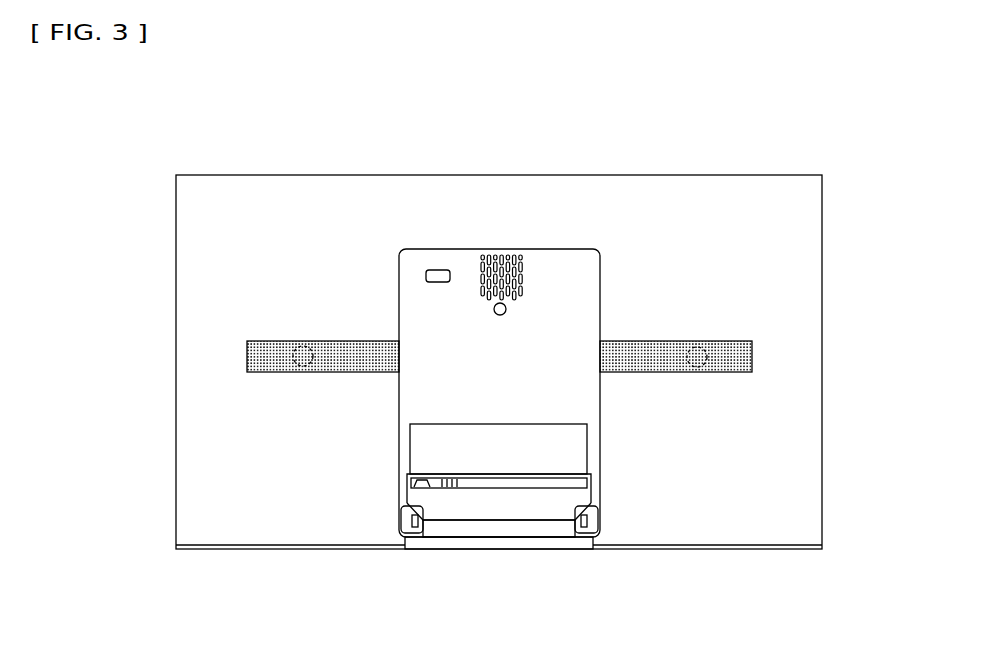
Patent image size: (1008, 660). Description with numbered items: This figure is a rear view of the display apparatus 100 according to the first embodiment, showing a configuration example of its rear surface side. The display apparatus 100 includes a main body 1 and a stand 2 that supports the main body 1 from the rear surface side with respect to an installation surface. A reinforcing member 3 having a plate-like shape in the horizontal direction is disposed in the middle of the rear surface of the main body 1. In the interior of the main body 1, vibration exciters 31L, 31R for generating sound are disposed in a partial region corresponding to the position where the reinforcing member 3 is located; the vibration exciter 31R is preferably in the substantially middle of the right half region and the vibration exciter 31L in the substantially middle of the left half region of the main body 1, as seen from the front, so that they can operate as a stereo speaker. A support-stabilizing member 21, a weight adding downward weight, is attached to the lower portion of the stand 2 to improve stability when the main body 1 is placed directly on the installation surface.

The display apparatus 100 is at (500, 353).
The main body 1 is at (822, 222).
The stand 2 is at (600, 280).
The reinforcing member 3 is at (500, 388).
The vibration exciter 31R is at (303, 367).
The vibration exciter 31L is at (697, 367).
The support-stabilizing member 21 is at (500, 528).